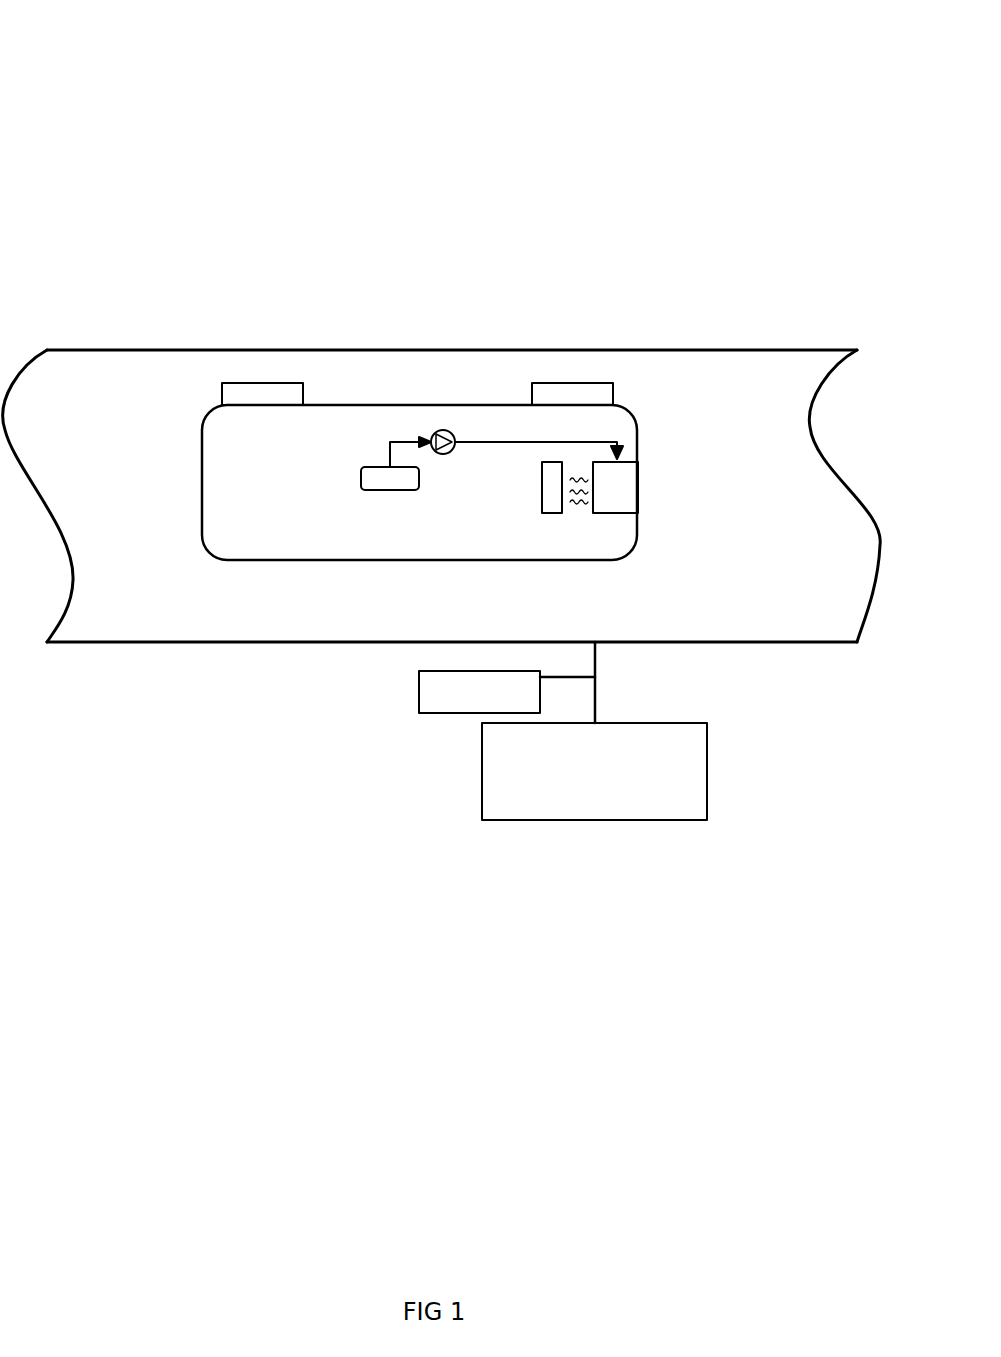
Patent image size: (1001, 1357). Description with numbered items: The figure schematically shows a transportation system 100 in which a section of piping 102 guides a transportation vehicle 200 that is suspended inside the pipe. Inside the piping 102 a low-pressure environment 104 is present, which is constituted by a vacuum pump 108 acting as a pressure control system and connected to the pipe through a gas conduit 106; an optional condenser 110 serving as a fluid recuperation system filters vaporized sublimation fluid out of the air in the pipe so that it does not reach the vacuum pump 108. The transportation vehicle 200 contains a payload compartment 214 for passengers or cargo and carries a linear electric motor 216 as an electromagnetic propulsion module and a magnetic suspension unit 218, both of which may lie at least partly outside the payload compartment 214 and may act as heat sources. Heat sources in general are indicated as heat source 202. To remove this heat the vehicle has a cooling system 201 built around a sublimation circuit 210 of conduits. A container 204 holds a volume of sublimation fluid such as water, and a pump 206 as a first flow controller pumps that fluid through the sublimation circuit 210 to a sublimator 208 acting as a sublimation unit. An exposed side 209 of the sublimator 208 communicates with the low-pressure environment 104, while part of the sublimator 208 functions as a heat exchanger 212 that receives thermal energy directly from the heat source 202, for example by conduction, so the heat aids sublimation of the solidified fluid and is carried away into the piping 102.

The transportation system 100 is at (68, 29).
The piping 102 is at (243, 350).
The low-pressure environment 104 is at (179, 624).
The gas conduit 106 is at (596, 692).
The vacuum pump 108 is at (707, 765).
The condenser 110 is at (443, 705).
The transportation vehicle 200 is at (382, 562).
The cooling system 201 is at (502, 514).
The heat source 202 is at (548, 472).
The container 204 is at (398, 475).
The pump 206 is at (450, 431).
The sublimator 208 is at (623, 466).
The exposed side 209 is at (640, 468).
The sublimation circuit 210 is at (533, 438).
The heat exchanger 212 is at (610, 498).
The payload compartment 214 is at (261, 560).
The linear electric motor 216 is at (233, 383).
The magnetic suspension unit 218 is at (607, 395).